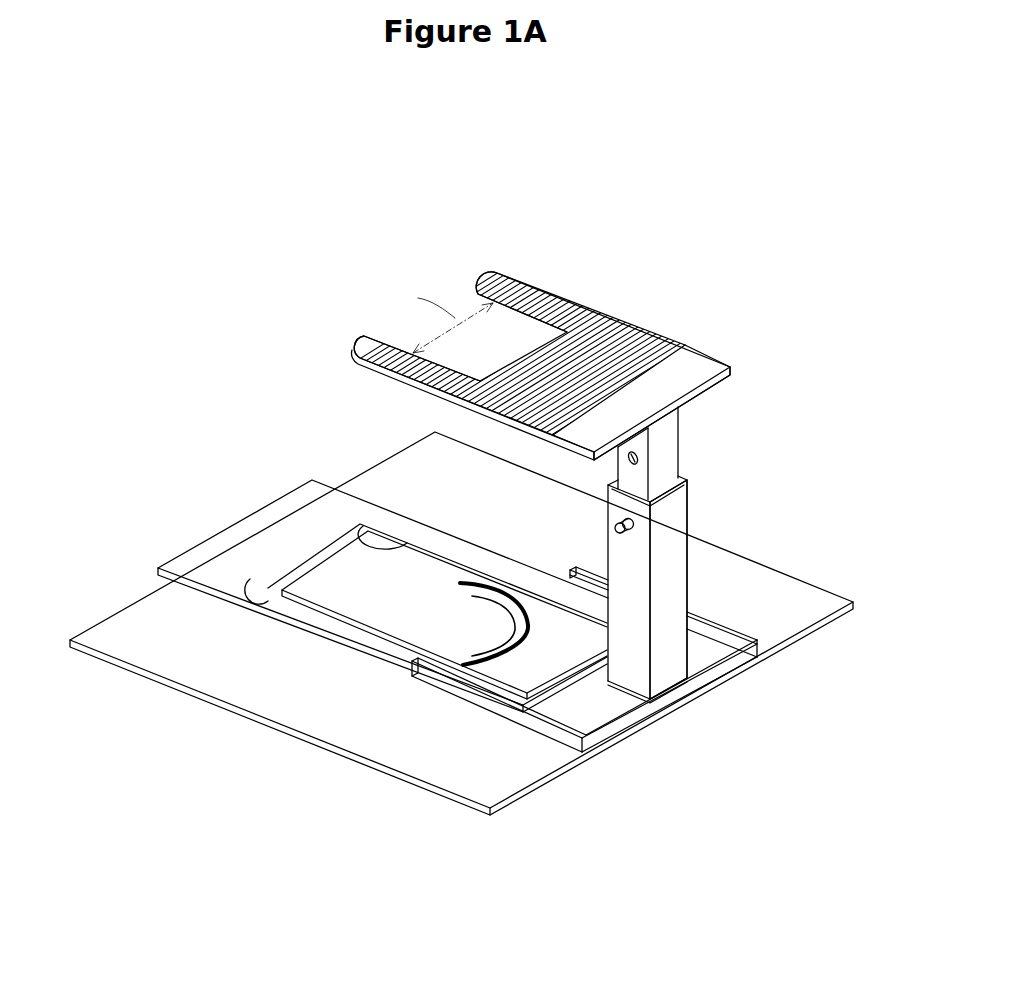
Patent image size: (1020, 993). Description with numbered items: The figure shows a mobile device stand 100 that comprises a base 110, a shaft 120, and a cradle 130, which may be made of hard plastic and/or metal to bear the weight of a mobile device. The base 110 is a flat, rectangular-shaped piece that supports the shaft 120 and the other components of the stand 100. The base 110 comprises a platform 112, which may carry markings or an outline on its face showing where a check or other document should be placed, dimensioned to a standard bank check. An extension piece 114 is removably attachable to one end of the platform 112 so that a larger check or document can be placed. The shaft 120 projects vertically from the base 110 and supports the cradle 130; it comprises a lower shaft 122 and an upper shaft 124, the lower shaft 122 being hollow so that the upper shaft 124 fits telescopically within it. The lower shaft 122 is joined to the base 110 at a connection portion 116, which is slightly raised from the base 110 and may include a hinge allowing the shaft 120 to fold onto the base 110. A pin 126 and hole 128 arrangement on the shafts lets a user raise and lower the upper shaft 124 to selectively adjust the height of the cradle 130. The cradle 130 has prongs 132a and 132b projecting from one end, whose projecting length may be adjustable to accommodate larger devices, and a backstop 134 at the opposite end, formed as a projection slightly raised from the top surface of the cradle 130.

The mobile device stand 100 is at (667, 223).
The base 110 is at (318, 717).
The platform 112 is at (385, 546).
The extension piece 114 is at (283, 522).
The connection portion 116 is at (633, 698).
The shaft 120 is at (702, 525).
The lower shaft 122 is at (673, 577).
The upper shaft 124 is at (673, 453).
The pin 126 is at (617, 527).
The hole 128 is at (627, 456).
The cradle 130 is at (638, 322).
The prong 132a is at (355, 348).
The prong 132b is at (468, 277).
The backstop 134 is at (722, 362).